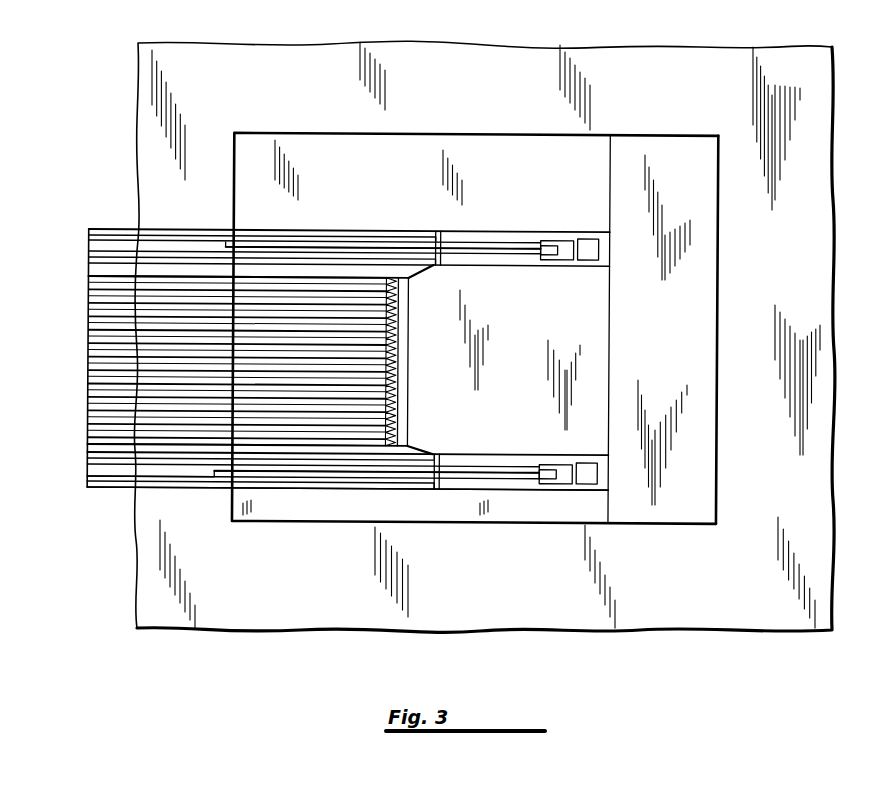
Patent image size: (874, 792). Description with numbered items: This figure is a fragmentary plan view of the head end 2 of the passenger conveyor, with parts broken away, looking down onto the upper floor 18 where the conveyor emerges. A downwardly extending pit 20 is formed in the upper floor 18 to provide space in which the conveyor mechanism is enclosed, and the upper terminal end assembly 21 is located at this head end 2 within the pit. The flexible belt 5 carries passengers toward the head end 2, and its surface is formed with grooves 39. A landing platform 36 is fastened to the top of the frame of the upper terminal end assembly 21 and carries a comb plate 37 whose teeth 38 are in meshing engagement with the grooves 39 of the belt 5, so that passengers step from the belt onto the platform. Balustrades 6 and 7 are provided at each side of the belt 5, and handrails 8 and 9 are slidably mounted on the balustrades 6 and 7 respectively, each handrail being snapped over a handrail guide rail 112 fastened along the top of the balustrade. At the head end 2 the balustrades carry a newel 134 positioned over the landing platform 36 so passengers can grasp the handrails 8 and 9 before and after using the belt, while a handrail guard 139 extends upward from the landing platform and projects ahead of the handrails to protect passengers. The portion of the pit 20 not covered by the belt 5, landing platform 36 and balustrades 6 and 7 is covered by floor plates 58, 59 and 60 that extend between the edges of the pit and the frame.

The upper floor 18 is at (803, 60).
The head end 2 is at (126, 220).
The floor plate 58 is at (320, 146).
The upper terminal end assembly 21 is at (386, 226).
The handrail 8 is at (313, 240).
The balustrade 6 is at (453, 243).
The newel 134 is at (455, 252).
The handrail guard 139 is at (566, 242).
The floor plate 59 is at (652, 329).
The handrail guide rail 112 is at (96, 243).
The grooves 39 is at (90, 315).
The flexible belt 5 is at (112, 382).
The teeth 38 is at (393, 350).
The comb plate 37 is at (393, 421).
The landing platform 36 is at (588, 349).
The pit 20 is at (710, 452).
The handrail 9 is at (320, 478).
The floor plate 60 is at (484, 506).
The balustrade 7 is at (513, 483).